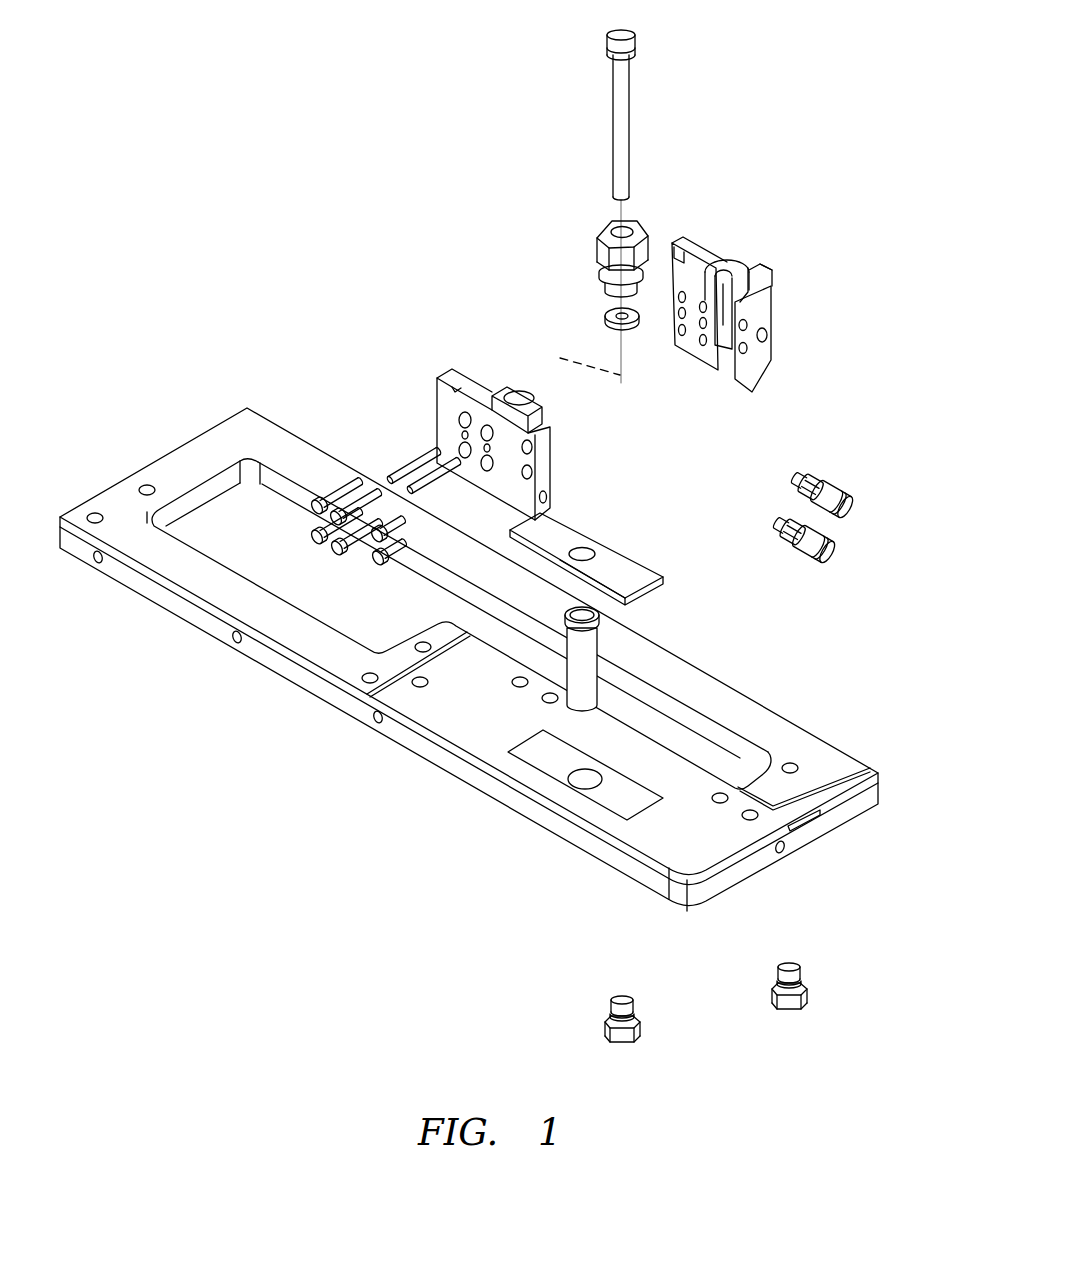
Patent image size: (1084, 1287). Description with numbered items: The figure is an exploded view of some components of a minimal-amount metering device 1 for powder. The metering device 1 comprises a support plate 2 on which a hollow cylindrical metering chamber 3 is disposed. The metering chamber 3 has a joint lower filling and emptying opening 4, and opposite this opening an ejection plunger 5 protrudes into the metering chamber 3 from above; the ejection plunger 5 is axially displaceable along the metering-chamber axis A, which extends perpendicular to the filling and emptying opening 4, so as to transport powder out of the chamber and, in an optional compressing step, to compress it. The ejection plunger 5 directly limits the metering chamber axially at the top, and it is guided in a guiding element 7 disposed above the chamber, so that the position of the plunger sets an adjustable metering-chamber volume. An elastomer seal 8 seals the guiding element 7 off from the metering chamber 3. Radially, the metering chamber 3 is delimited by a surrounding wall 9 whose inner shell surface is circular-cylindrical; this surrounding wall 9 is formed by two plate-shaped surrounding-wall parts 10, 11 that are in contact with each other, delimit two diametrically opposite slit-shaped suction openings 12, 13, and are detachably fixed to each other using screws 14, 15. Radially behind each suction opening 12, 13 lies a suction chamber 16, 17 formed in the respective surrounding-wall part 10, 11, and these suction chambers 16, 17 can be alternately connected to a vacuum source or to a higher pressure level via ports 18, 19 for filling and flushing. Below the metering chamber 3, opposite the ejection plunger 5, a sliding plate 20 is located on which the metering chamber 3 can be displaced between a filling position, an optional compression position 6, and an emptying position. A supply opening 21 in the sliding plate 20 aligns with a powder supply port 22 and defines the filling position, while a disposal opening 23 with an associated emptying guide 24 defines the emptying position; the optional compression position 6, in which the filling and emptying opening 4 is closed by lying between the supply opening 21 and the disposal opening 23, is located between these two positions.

The minimal-amount metering device 1 is at (853, 249).
The support plate 2 is at (830, 742).
The metering chamber 3 is at (751, 313).
The filling and emptying opening 4 is at (722, 380).
The ejection plunger 5 is at (620, 128).
The compression position 6 is at (621, 586).
The guiding element 7 is at (607, 248).
The elastomer seal 8 is at (610, 318).
The surrounding wall 9 is at (737, 280).
The surrounding-wall part 10 is at (458, 384).
The surrounding-wall part 11 is at (778, 333).
The suction opening 12 is at (760, 338).
The suction opening 13 is at (715, 273).
The screw 14 is at (313, 508).
The screw 15 is at (373, 560).
The suction chamber 16 is at (777, 310).
The suction chamber 17 is at (717, 357).
The port 18 is at (850, 512).
The port 19 is at (834, 552).
The sliding plate 20 is at (640, 533).
The supply opening 21 is at (622, 577).
The powder supply port 22 is at (627, 1043).
The disposal opening 23 is at (580, 550).
The emptying guide 24 is at (583, 665).